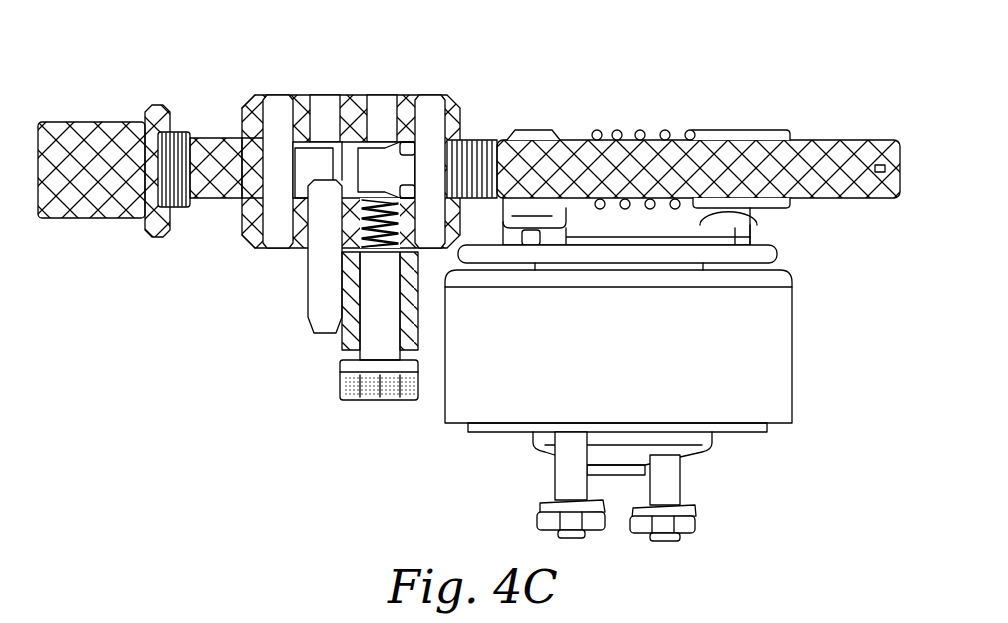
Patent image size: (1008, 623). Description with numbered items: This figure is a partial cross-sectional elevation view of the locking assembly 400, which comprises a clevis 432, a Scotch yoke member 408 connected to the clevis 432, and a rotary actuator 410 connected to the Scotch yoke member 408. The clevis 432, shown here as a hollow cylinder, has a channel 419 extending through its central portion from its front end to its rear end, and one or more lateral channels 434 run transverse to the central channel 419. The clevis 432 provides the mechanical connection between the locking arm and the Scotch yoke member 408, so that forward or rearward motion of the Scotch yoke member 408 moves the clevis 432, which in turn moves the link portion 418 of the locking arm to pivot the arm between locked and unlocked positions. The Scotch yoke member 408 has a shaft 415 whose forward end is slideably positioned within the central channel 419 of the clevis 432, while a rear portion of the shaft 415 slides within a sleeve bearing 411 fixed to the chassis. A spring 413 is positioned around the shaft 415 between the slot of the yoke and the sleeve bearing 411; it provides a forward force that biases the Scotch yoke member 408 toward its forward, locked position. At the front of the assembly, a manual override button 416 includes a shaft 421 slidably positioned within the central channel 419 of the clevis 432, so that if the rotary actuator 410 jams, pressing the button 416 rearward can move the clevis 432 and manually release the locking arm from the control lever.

The locking assembly 400 is at (108, 283).
The Scotch yoke member 408 is at (505, 105).
The rotary actuator 410 is at (468, 405).
The sleeve bearing 411 is at (715, 128).
The spring 413 is at (640, 130).
The shaft 415 is at (835, 145).
The manual override button 416 is at (90, 135).
The link portion 418 is at (345, 350).
The channel 419 is at (243, 205).
The shaft 421 is at (218, 148).
The clevis 432 is at (345, 105).
The lateral channel 434 is at (437, 110).